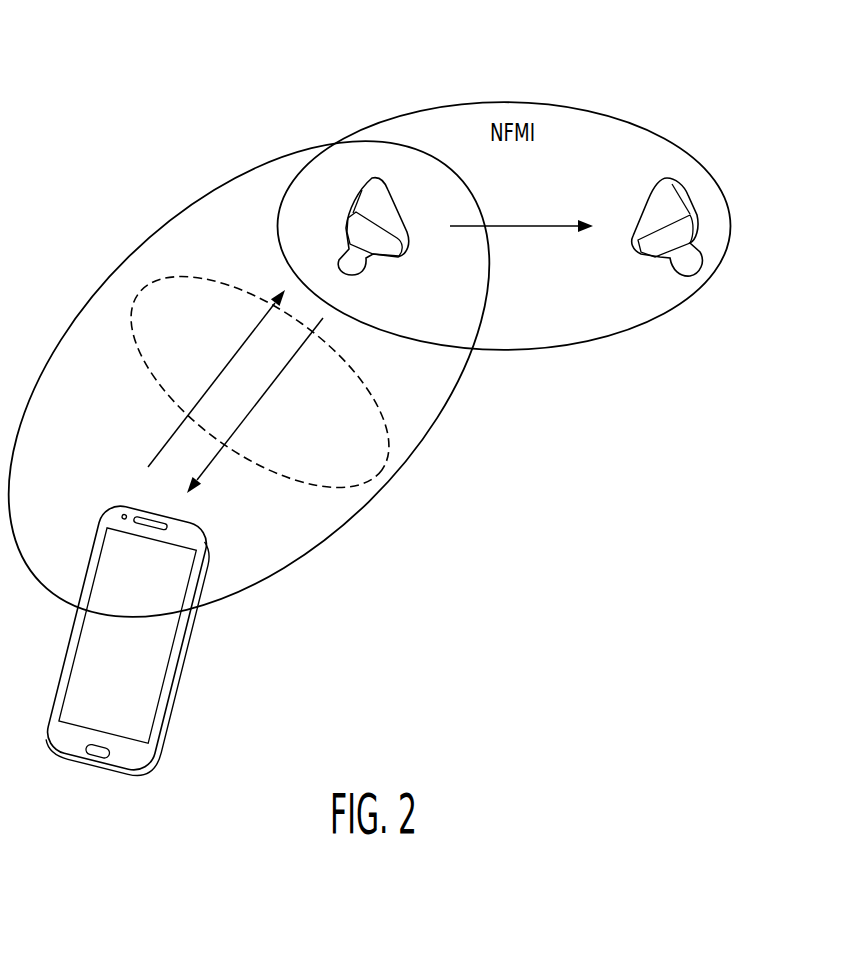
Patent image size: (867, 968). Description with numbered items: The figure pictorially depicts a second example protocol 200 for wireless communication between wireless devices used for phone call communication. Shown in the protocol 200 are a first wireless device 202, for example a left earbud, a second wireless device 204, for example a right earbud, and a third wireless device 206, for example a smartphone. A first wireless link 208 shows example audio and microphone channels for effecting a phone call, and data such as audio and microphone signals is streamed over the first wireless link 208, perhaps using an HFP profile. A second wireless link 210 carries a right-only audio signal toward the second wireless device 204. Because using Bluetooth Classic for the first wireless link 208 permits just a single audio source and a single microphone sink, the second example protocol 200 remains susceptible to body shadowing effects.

The second example protocol 200 is at (150, 130).
The first wireless device 202 is at (357, 190).
The second wireless device 204 is at (672, 190).
The third wireless device 206 is at (173, 670).
The first wireless link 208 is at (390, 431).
The second wireless link 210 is at (541, 225).